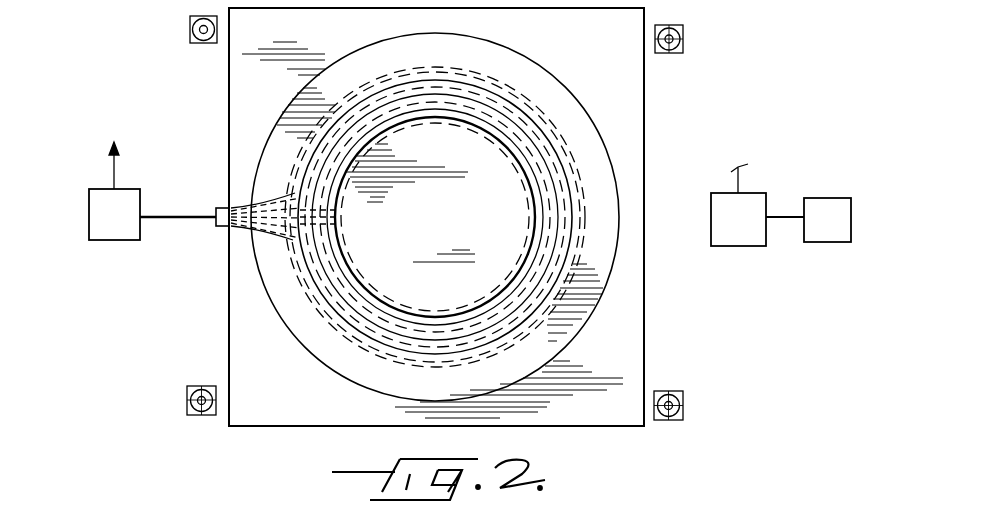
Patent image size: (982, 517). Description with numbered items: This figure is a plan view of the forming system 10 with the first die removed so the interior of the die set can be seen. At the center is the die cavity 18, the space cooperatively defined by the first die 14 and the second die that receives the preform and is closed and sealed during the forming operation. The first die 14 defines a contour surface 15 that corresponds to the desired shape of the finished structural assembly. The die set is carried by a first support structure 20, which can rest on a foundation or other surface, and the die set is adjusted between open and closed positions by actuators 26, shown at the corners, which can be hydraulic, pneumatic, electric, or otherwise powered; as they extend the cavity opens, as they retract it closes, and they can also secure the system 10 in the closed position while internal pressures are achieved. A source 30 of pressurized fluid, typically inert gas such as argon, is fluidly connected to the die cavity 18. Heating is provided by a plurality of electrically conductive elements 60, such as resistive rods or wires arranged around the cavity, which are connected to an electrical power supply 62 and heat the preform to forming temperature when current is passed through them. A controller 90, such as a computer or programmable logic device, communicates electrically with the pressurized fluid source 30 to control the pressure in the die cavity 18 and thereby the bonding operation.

The system 10 is at (208, 75).
The first die 14 is at (540, 64).
The contour surface 15 is at (362, 296).
The die cavity 18 is at (378, 318).
The first support structure 20 is at (628, 338).
The actuators 26 is at (190, 26).
The source of pressurized fluid 30 is at (737, 235).
The electrically conductive elements 60 is at (292, 253).
The electrical power supply 62 is at (111, 228).
The controller 90 is at (828, 205).